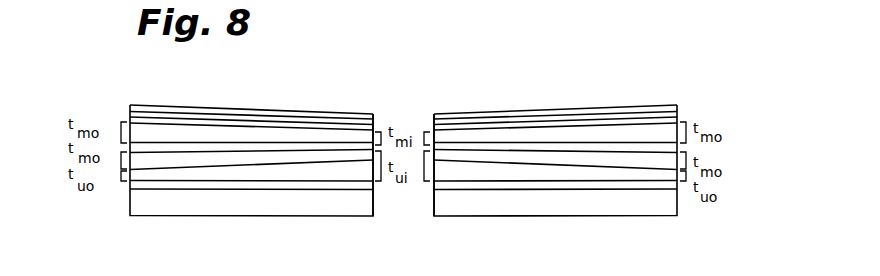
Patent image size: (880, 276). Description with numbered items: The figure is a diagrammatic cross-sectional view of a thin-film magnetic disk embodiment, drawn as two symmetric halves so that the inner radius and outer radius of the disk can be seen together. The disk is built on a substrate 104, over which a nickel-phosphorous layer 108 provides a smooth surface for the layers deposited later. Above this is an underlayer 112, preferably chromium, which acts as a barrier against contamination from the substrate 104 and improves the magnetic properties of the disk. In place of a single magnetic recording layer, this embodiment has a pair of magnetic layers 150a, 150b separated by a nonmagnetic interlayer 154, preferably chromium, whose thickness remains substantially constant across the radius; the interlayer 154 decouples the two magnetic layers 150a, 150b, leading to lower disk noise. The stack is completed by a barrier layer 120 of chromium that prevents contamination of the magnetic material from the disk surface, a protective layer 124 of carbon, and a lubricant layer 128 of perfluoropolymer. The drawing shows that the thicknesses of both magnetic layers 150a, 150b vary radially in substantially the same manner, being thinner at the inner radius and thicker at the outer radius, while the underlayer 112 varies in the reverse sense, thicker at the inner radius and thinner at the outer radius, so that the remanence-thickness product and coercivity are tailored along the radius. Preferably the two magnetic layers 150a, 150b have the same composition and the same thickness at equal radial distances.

The substrate 104 is at (446, 206).
The nickel-phosphorous layer 108 is at (436, 186).
The underlayer 112 is at (143, 176).
The barrier layer 120 is at (142, 129).
The protective layer 124 is at (130, 116).
The lubricant layer 128 is at (243, 108).
The magnetic layer 150a is at (133, 155).
The magnetic layer 150b is at (128, 119).
The interlayer 154 is at (447, 147).